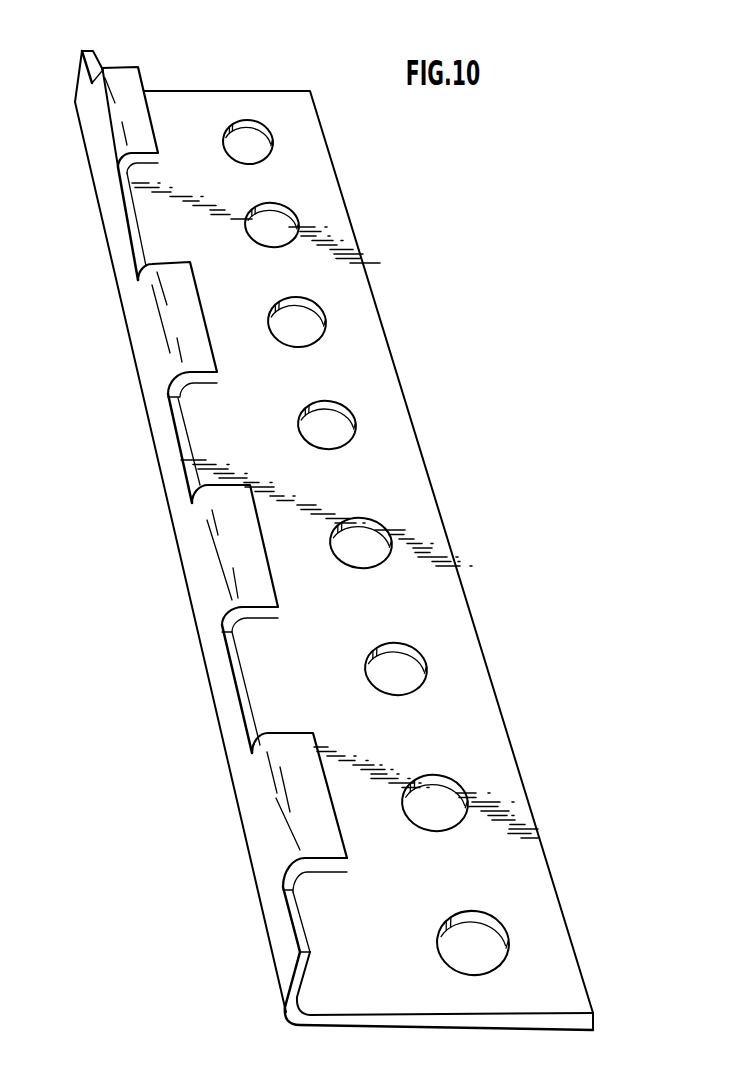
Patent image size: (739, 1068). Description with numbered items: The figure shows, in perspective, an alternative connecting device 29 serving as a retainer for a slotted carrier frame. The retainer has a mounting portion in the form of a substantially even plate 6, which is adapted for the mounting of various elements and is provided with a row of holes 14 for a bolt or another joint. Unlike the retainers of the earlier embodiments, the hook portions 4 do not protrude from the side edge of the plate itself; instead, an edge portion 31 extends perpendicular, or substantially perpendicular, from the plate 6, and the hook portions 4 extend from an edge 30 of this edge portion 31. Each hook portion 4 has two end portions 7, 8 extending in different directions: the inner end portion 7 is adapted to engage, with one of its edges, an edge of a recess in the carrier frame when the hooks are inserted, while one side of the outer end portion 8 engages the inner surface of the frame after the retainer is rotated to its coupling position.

The hook portion 4 is at (131, 58).
The main portion 6 is at (358, 357).
The inner end portion 7 is at (118, 170).
The outer end portion 8 is at (142, 185).
The holes 14 is at (260, 140).
The connecting device 29 is at (372, 223).
The edge 30 is at (197, 463).
The edge portion 31 is at (293, 992).